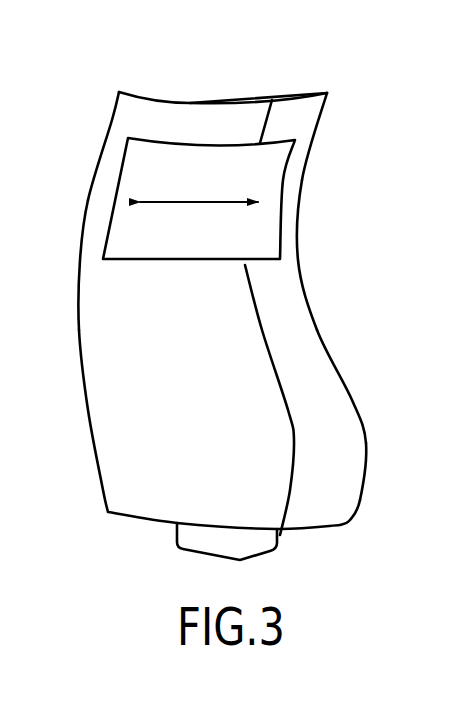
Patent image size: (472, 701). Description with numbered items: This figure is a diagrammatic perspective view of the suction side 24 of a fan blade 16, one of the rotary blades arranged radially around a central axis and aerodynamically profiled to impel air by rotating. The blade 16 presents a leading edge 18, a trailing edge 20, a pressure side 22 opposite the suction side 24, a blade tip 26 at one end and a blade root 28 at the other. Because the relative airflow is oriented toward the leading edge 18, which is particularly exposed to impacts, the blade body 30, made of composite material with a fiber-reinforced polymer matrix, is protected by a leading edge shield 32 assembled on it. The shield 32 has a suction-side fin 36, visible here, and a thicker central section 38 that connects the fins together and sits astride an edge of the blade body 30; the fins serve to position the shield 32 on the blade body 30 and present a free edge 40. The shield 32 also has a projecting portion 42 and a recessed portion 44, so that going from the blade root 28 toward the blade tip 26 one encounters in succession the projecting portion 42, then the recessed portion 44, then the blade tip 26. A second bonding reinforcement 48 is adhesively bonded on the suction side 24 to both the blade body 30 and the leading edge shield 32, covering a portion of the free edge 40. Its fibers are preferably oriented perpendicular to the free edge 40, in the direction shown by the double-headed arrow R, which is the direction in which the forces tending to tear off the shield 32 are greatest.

The blade 16 is at (362, 115).
The leading edge 18 is at (352, 392).
The trailing edge 20 is at (80, 304).
The pressure side 22 is at (196, 94).
The suction side 24 is at (98, 200).
The blade tip 26 is at (255, 100).
The blade root 28 is at (286, 564).
The blade body 30 is at (93, 431).
The leading edge shield 32 is at (372, 478).
The suction-side fin 36 is at (279, 100).
The central section 38 is at (313, 96).
The free edge 40 is at (291, 431).
The projecting portion 42 is at (374, 439).
The recessed portion 44 is at (304, 252).
The second bonding reinforcement 48 is at (120, 160).